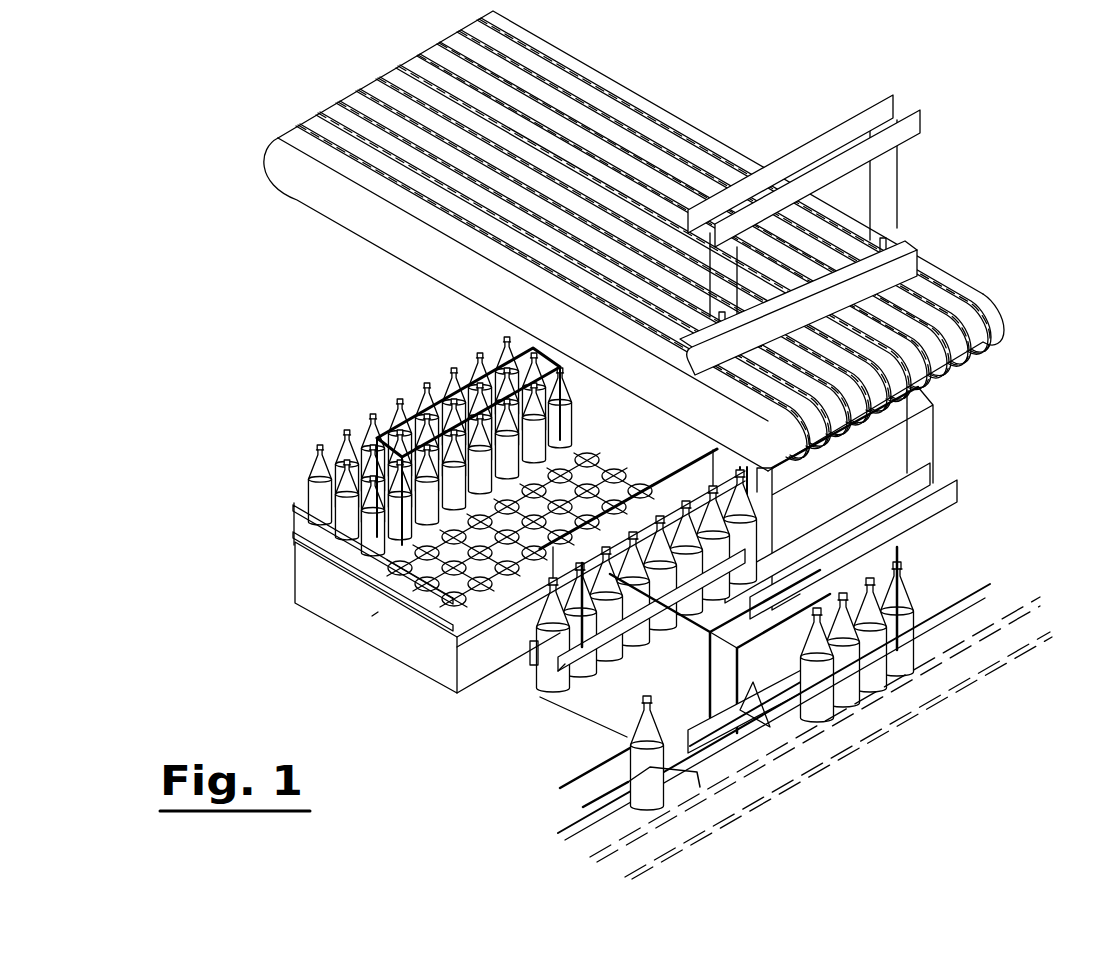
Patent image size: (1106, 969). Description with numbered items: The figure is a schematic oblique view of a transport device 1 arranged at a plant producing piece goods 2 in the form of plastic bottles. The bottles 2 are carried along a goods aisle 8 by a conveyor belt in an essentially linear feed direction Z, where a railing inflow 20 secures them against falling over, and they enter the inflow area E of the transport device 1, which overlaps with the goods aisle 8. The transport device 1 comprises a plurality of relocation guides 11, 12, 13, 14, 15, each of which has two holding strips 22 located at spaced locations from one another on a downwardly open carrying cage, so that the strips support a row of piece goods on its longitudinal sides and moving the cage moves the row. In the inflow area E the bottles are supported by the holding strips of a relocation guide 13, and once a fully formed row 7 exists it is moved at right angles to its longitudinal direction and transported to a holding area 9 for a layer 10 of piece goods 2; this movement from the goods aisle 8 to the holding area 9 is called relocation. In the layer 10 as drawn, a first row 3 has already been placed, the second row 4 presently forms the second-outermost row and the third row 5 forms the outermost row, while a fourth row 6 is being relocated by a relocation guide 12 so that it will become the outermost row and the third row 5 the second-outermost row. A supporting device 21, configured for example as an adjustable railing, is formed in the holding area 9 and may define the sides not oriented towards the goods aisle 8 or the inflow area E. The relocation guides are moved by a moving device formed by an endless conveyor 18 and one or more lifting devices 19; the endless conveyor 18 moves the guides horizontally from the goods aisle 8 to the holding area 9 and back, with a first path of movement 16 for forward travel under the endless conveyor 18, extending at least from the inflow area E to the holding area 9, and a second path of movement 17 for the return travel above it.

The transport device 1 is at (205, 330).
The piece goods 2 is at (897, 645).
The row 3 is at (298, 505).
The second row 4 is at (293, 532).
The third row 5 is at (297, 577).
The fourth row 6 is at (483, 663).
The fully formed row 7 is at (932, 600).
The goods aisle 8 is at (973, 621).
The holding area 9 is at (453, 578).
The layer 10 is at (378, 395).
The relocation guide 11 is at (332, 590).
The relocation guide 12 is at (547, 693).
The relocation guide 13 is at (747, 742).
The relocation guide 14 is at (947, 498).
The relocation guide 15 is at (900, 137).
The first path of movement 16 is at (322, 406).
The second path of movement 17 is at (382, 110).
The endless conveyor 18 is at (290, 167).
The lifting device 19 is at (898, 268).
The railing inflow 20 is at (548, 780).
The supporting device 21 is at (375, 615).
The holding strips 22 is at (822, 760).
The inflow area E is at (842, 735).
The feed direction Z is at (603, 832).